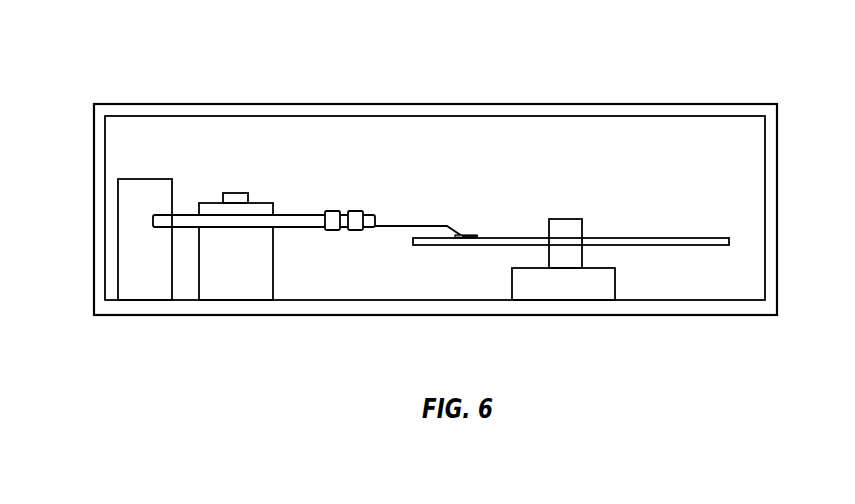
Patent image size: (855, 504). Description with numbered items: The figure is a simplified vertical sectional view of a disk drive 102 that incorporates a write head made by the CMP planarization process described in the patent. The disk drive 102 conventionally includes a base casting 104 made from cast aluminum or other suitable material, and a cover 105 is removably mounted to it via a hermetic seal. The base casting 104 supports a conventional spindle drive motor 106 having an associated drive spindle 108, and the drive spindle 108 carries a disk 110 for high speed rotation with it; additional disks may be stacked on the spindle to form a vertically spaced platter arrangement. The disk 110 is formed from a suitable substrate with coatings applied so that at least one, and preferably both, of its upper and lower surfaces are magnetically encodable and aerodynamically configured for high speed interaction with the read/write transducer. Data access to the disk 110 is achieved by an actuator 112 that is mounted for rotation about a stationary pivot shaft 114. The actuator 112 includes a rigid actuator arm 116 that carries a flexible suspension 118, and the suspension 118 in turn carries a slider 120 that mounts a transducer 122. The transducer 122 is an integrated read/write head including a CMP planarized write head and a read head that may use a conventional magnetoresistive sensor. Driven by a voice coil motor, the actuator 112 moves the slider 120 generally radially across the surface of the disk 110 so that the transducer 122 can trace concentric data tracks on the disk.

The disk drive 102 is at (119, 57).
The base casting 104 is at (393, 316).
The cover 105 is at (393, 104).
The spindle drive motor 106 is at (616, 283).
The drive spindle 108 is at (566, 219).
The disk 110 is at (688, 238).
The actuator 112 is at (276, 275).
The pivot shaft 114 is at (236, 193).
The actuator arm 116 is at (300, 212).
The suspension 118 is at (398, 226).
The slider 120 is at (463, 234).
The transducer 122 is at (482, 235).